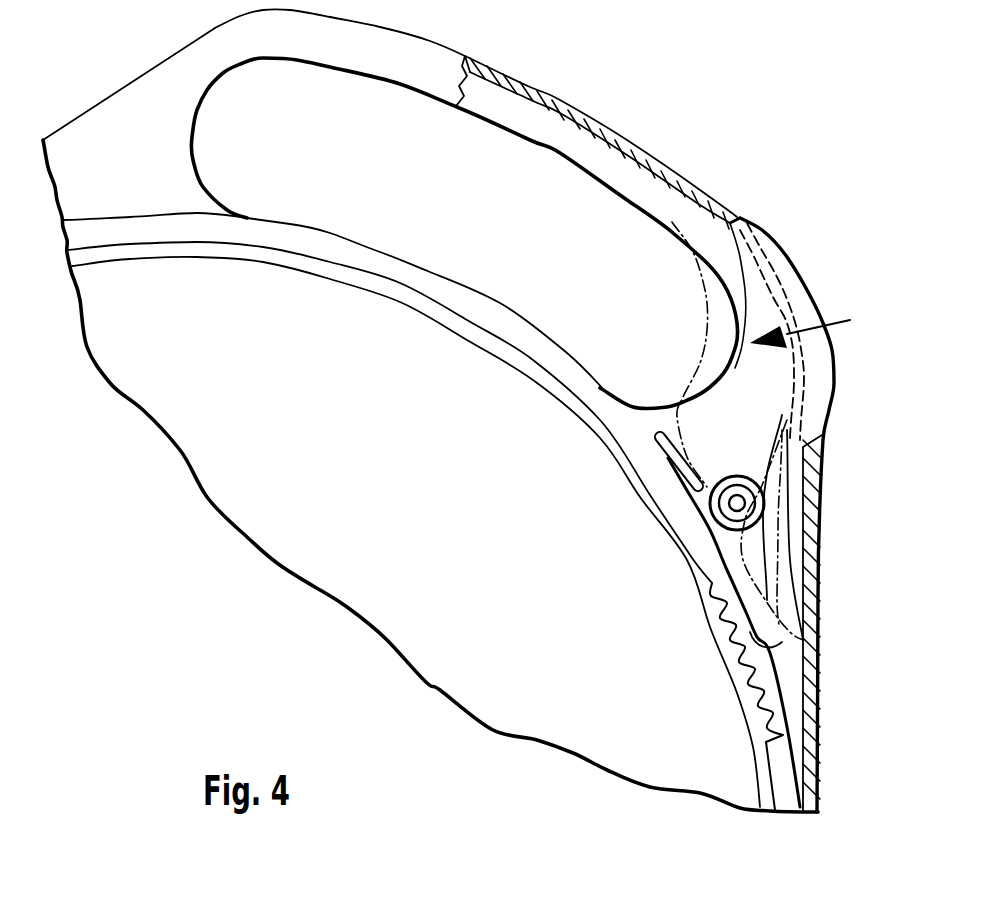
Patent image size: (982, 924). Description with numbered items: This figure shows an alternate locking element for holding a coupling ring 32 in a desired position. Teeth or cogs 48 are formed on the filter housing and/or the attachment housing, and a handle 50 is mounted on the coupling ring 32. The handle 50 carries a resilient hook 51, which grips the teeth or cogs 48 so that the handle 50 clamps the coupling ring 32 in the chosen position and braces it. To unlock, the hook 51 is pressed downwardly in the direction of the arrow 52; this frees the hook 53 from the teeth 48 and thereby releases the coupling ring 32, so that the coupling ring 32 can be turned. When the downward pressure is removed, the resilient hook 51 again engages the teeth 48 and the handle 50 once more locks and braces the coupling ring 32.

The coupling ring 32 is at (110, 227).
The teeth or cogs 48 is at (733, 610).
The handle 50 is at (672, 217).
The resilient hook 51 is at (753, 547).
The arrow 52 is at (807, 290).
The hook 53 is at (807, 650).